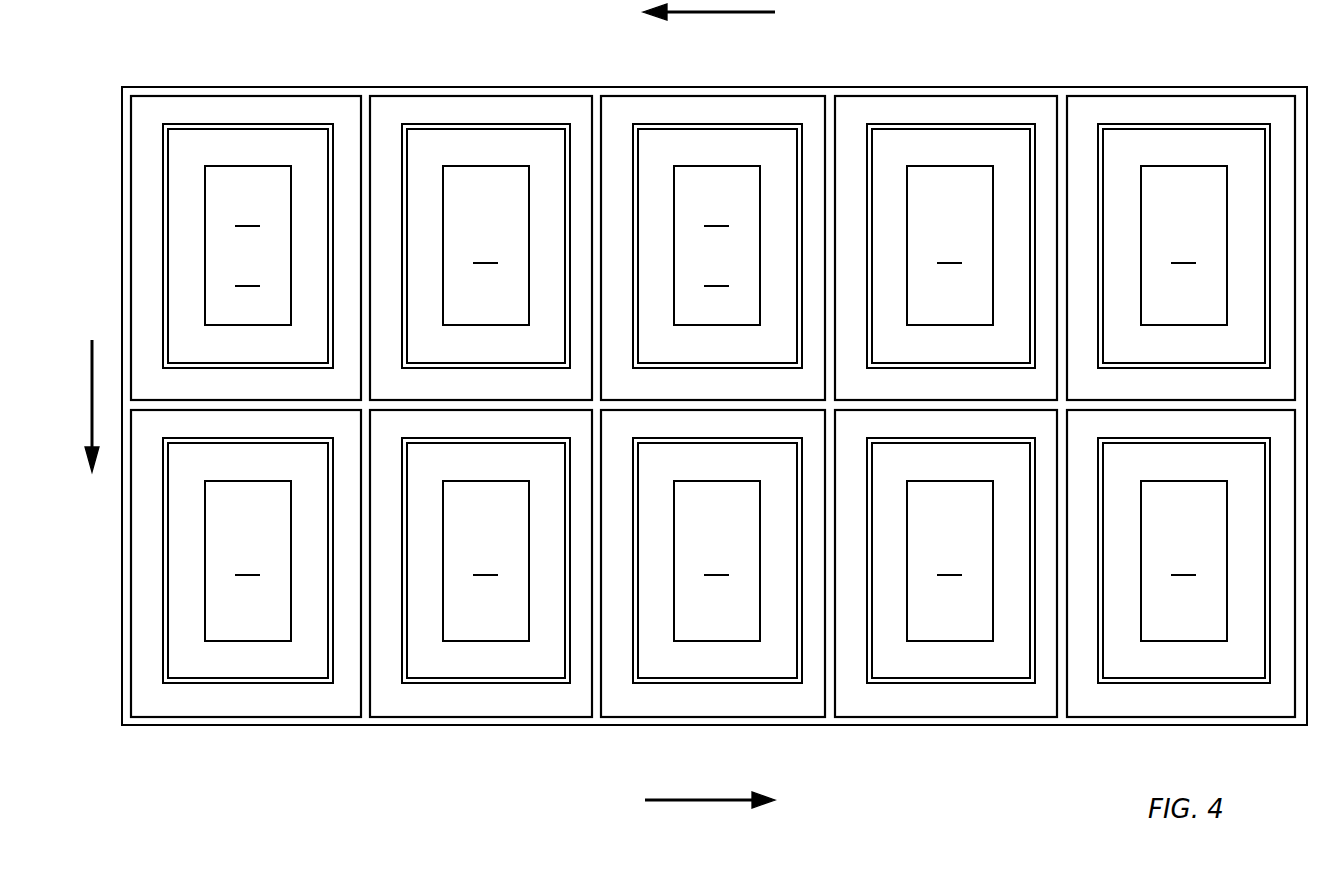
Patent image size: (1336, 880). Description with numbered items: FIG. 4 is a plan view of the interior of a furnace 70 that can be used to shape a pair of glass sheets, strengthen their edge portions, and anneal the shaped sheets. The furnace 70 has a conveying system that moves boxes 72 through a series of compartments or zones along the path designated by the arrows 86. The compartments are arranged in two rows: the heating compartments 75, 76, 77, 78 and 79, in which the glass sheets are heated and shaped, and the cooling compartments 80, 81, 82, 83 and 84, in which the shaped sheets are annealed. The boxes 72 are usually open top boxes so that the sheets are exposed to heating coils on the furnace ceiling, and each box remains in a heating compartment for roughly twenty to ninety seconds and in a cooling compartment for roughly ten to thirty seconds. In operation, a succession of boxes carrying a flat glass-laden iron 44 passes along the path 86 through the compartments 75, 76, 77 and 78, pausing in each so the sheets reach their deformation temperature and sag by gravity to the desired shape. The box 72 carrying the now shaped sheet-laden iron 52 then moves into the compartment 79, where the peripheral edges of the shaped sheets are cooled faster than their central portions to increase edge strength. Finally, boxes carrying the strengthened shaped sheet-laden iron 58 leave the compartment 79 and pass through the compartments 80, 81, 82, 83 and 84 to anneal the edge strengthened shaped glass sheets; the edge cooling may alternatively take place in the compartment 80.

The furnace 70 is at (1175, 63).
The box 72 is at (313, 125).
The heating compartment 75 is at (1260, 113).
The heating compartment 76 is at (865, 113).
The heating compartment 77 is at (757, 108).
The heating compartment 78 is at (410, 108).
The heating compartment 79 is at (182, 108).
The cooling compartment 80 is at (187, 707).
The cooling compartment 81 is at (430, 703).
The cooling compartment 82 is at (782, 703).
The cooling compartment 83 is at (900, 703).
The cooling compartment 84 is at (1252, 703).
The path arrows 86 is at (702, 15).
The flat glass-laden iron 44 is at (950, 245).
The shaped sheet-laden iron 52 is at (217, 192).
The strengthened shaped sheet-laden iron 58 is at (716, 561).